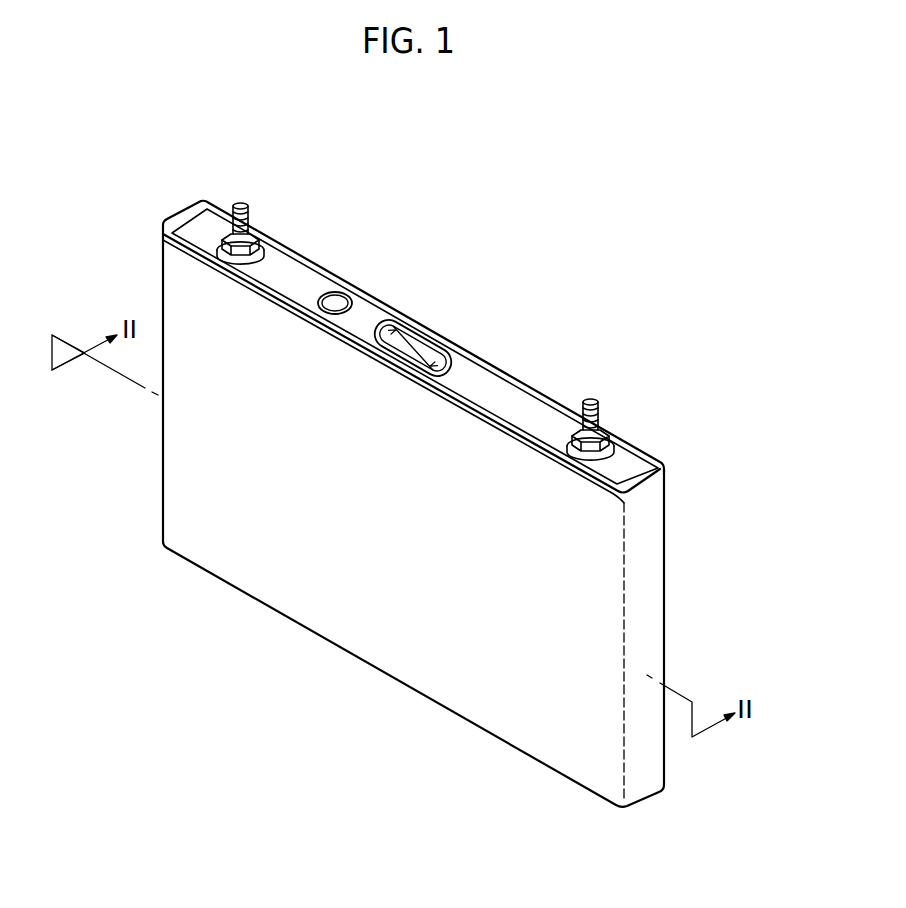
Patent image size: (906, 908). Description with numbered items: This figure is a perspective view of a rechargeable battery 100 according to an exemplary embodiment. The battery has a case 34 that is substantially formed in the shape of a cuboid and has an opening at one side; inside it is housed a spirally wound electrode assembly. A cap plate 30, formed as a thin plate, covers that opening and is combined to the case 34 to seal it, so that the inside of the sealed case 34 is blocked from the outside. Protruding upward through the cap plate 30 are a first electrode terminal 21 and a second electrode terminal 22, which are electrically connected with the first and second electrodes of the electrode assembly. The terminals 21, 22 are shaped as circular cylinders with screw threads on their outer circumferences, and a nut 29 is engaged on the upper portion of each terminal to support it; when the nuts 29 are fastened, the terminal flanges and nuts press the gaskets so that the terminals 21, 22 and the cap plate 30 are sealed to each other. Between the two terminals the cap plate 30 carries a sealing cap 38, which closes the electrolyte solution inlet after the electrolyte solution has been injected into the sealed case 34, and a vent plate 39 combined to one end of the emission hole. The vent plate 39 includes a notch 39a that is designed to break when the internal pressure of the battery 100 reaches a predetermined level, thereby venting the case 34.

The rechargeable battery 100 is at (527, 351).
The first electrode terminal 21 is at (245, 204).
The second electrode terminal 22 is at (593, 404).
The nut 29 is at (603, 446).
The cap plate 30 is at (286, 272).
The case 34 is at (374, 640).
The sealing cap 38 is at (338, 296).
The vent plate 39 is at (413, 342).
The notch 39a is at (433, 353).